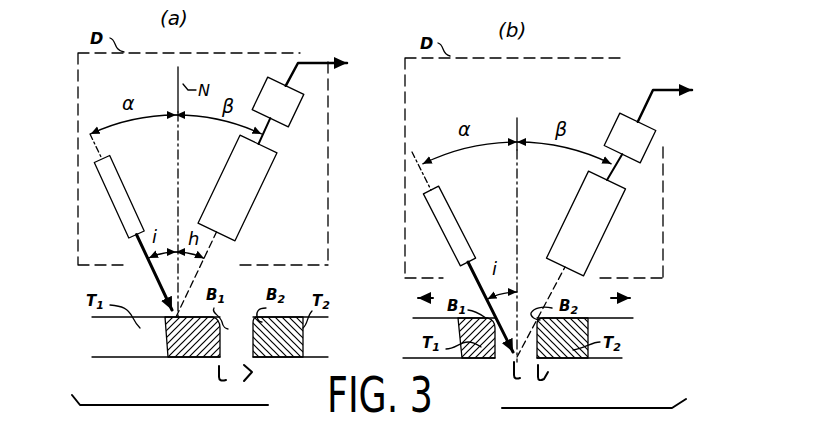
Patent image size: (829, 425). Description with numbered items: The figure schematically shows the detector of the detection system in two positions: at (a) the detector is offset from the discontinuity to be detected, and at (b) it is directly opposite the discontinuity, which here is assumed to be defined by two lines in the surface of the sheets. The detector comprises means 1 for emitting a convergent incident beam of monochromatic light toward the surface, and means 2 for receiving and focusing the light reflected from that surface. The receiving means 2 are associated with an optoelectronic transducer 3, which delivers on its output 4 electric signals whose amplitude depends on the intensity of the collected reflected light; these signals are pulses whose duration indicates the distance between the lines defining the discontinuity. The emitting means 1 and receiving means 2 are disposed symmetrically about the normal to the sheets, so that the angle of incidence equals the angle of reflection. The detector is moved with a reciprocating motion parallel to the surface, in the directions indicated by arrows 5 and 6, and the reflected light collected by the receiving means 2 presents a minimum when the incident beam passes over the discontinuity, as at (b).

The means for emitting a convergent incident beam of monochromatic light 1 is at (124, 182).
The means for receiving and focusing the reflected light 2 is at (412, 205).
The optoelectronic transducer 3 is at (454, 128).
The output 4 is at (320, 63).
The arrow indicating the direction of reciprocating movement 5 is at (432, 297).
The arrow indicating the direction of reciprocating movement 6 is at (617, 297).